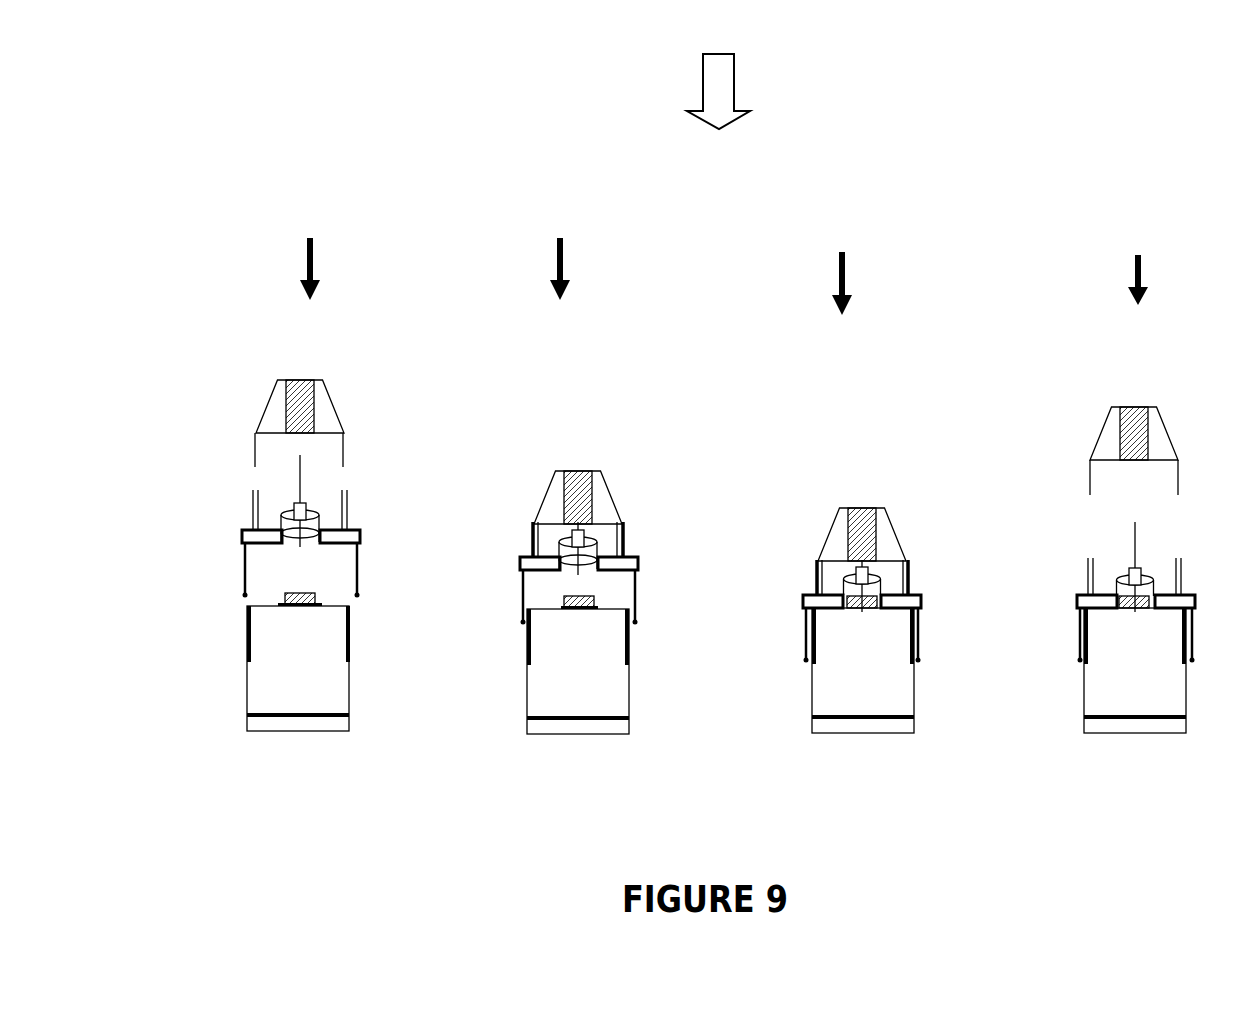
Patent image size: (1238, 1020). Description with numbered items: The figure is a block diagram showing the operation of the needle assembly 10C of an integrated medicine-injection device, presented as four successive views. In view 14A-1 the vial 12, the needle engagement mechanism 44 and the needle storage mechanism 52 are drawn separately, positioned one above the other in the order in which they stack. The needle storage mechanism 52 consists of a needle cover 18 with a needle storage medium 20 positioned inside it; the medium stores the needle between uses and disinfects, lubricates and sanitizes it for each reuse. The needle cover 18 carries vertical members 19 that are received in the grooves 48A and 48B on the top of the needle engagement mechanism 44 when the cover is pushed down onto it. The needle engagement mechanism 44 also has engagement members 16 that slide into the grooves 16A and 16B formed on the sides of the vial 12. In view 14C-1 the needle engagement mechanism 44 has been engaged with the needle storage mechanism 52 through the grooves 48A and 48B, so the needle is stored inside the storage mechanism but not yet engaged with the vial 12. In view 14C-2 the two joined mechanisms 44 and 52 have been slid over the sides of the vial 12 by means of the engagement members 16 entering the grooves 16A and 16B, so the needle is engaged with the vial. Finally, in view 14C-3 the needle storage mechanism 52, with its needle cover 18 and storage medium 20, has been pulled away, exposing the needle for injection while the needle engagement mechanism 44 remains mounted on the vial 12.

The needle assembly 10C is at (744, 78).
The view 14A-1 is at (343, 258).
The view 14C-1 is at (593, 258).
The view 14C-2 is at (843, 271).
The view 14C-3 is at (1141, 266).
The needle storage mechanism 52 is at (645, 455).
The needle cover 18 is at (268, 392).
The needle storage medium 20 is at (308, 405).
The vertical members 19 is at (255, 455).
The needle engagement mechanism 44 is at (653, 559).
The groove mechanism member 48A is at (253, 517).
The groove mechanism member 48B is at (348, 503).
The engagement members 16 is at (304, 570).
The vial 12 is at (649, 663).
The groove 16A is at (243, 618).
The groove 16B is at (358, 643).